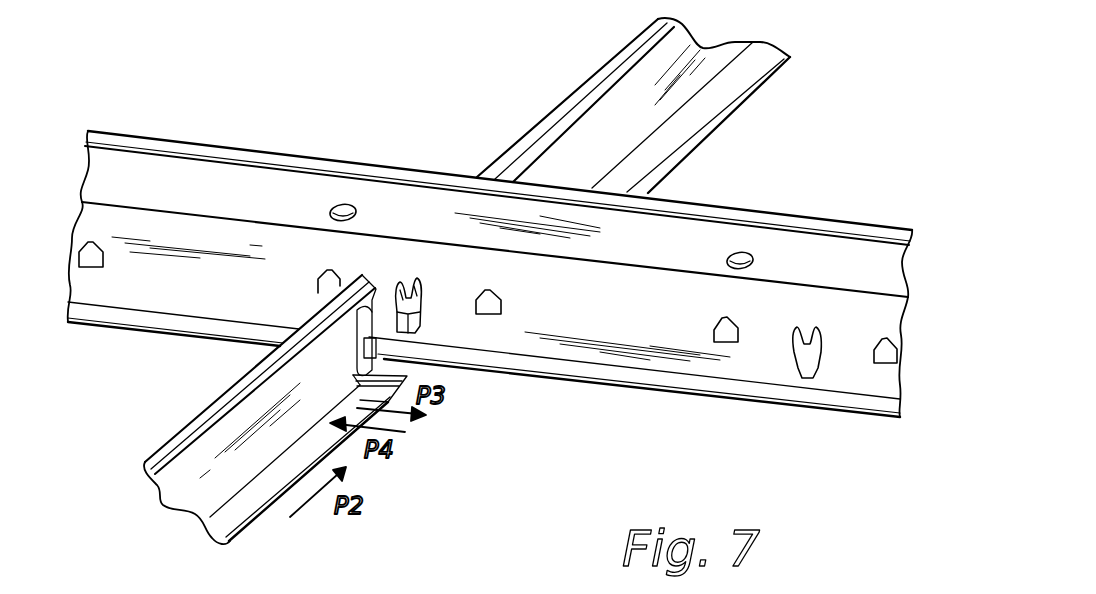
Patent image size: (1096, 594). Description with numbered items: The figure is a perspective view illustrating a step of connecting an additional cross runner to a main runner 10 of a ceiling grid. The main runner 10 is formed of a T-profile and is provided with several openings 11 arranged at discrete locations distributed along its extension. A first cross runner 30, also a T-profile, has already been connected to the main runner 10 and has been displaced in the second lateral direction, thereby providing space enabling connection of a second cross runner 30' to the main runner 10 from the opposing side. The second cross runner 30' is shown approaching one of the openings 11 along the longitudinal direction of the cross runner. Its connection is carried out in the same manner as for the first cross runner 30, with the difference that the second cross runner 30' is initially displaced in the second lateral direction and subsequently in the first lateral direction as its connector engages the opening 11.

The main runner 10 is at (673, 292).
The cross runner 30 is at (633, 105).
The second cross runner 30' is at (255, 409).
The opening 11 is at (393, 295).